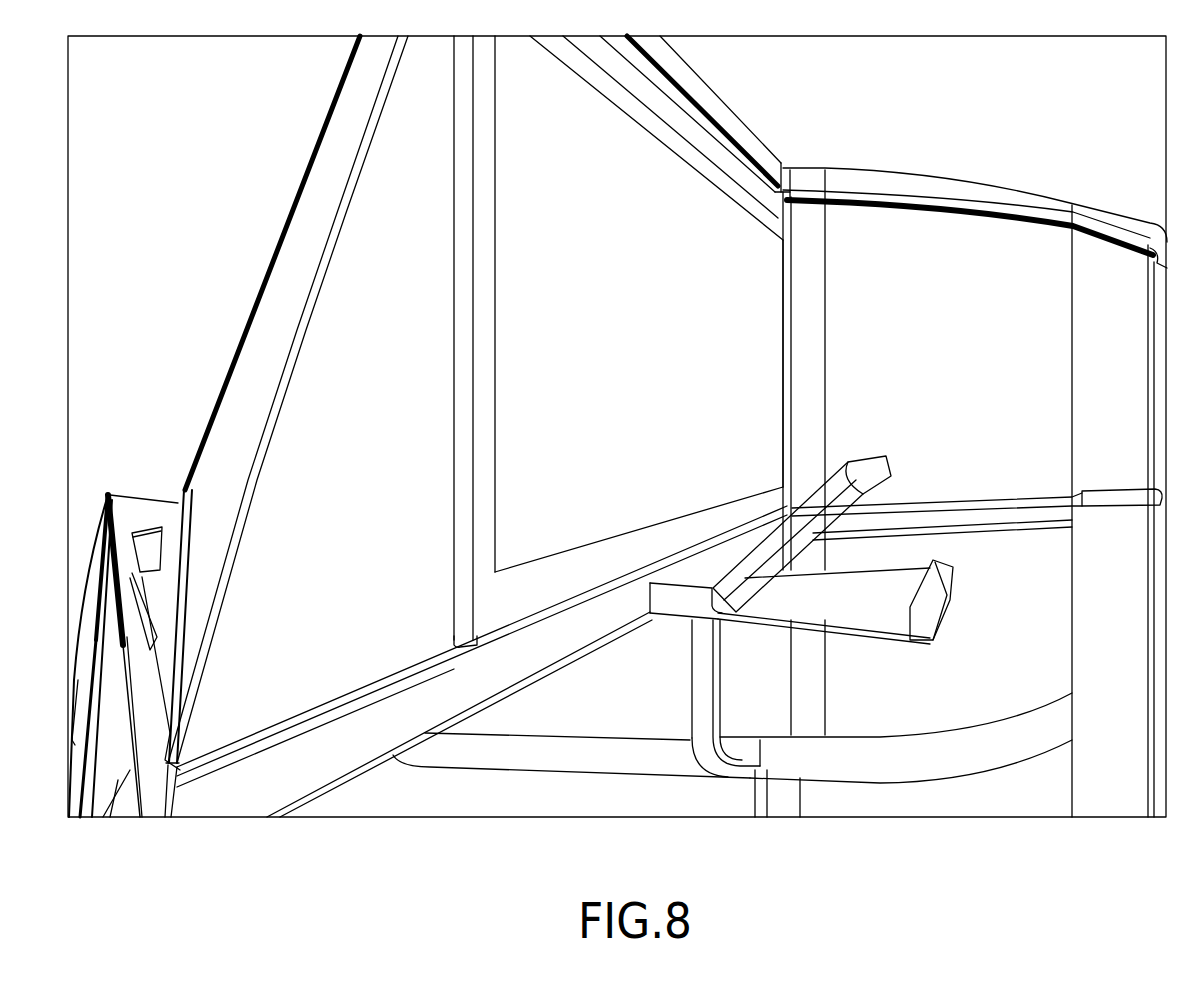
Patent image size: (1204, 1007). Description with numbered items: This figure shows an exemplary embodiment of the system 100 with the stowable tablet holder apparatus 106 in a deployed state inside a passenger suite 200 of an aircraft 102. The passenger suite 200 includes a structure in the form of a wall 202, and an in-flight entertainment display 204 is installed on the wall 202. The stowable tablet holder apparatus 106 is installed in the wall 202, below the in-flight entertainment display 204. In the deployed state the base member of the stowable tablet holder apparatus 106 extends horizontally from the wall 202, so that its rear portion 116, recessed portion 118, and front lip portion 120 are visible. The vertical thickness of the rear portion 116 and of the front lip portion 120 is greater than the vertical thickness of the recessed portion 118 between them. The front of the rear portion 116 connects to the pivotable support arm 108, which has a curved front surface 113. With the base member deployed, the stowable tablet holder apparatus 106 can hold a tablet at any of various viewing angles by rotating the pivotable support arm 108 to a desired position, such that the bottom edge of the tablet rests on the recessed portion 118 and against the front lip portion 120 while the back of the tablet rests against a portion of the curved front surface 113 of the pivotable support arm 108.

The system 100 is at (617, 426).
The aircraft 102 is at (618, 426).
The passenger suite 200 is at (275, 426).
The wall 202 is at (240, 375).
The in-flight entertainment display 204 is at (668, 352).
The stowable tablet holder apparatus 106 is at (836, 551).
The pivotable support arm 108 is at (836, 512).
The curved front surface 113 is at (886, 460).
The rear portion 116 is at (673, 607).
The recessed portion 118 is at (885, 615).
The front lip portion 120 is at (943, 562).